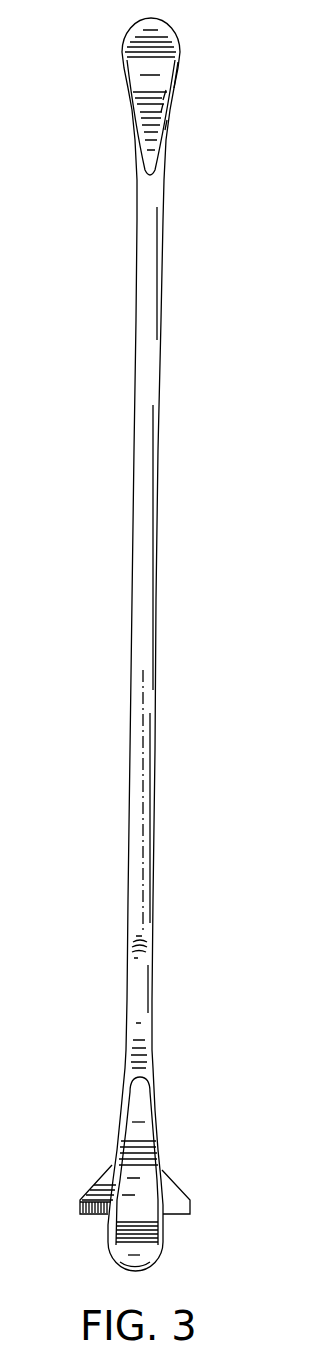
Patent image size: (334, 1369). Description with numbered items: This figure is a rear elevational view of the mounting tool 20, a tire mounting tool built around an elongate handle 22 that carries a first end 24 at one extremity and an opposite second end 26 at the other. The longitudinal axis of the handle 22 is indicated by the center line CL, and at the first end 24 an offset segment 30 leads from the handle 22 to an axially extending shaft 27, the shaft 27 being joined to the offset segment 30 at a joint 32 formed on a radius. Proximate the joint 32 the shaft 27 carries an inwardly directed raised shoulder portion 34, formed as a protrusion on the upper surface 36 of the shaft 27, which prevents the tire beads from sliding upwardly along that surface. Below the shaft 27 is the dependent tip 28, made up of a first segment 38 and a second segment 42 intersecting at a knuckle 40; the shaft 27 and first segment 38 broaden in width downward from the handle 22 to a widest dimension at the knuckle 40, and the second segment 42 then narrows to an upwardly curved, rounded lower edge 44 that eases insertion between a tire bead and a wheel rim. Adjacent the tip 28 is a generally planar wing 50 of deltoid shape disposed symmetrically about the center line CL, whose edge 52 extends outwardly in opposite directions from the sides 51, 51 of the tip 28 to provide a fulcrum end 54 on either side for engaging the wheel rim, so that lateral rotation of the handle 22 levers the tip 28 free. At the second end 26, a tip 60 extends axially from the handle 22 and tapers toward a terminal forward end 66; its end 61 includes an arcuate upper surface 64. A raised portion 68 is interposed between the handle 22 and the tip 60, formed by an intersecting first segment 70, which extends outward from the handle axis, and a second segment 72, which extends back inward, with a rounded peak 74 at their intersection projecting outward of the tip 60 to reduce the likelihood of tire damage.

The mounting tool 20 is at (149, 650).
The handle 22 is at (147, 590).
The first end 24 is at (147, 1132).
The second end 26 is at (156, 87).
The shaft 27 is at (118, 1120).
The tip 28 is at (143, 1261).
The offset segment 30 is at (153, 988).
The joint 32 is at (145, 1032).
The raised shoulder portion 34 is at (140, 1068).
The upper surface 36 is at (140, 1128).
The first segment 38 is at (140, 1187).
The knuckle 40 is at (108, 1233).
The second segment 42 is at (125, 1257).
The lower edge 44 is at (138, 1267).
The wing 50 is at (73, 1195).
The sides 51 is at (118, 1160).
The edge 52 is at (93, 1220).
The fulcrum end 54 is at (85, 1213).
The tip 60 is at (109, 102).
The end 61 is at (177, 70).
The upper surface 64 is at (147, 58).
The terminal forward end 66 is at (150, 18).
The raised portion 68 is at (133, 117).
The first segment 70 is at (167, 125).
The second segment 72 is at (163, 95).
The peak 74 is at (162, 108).
The center line CL is at (143, 825).